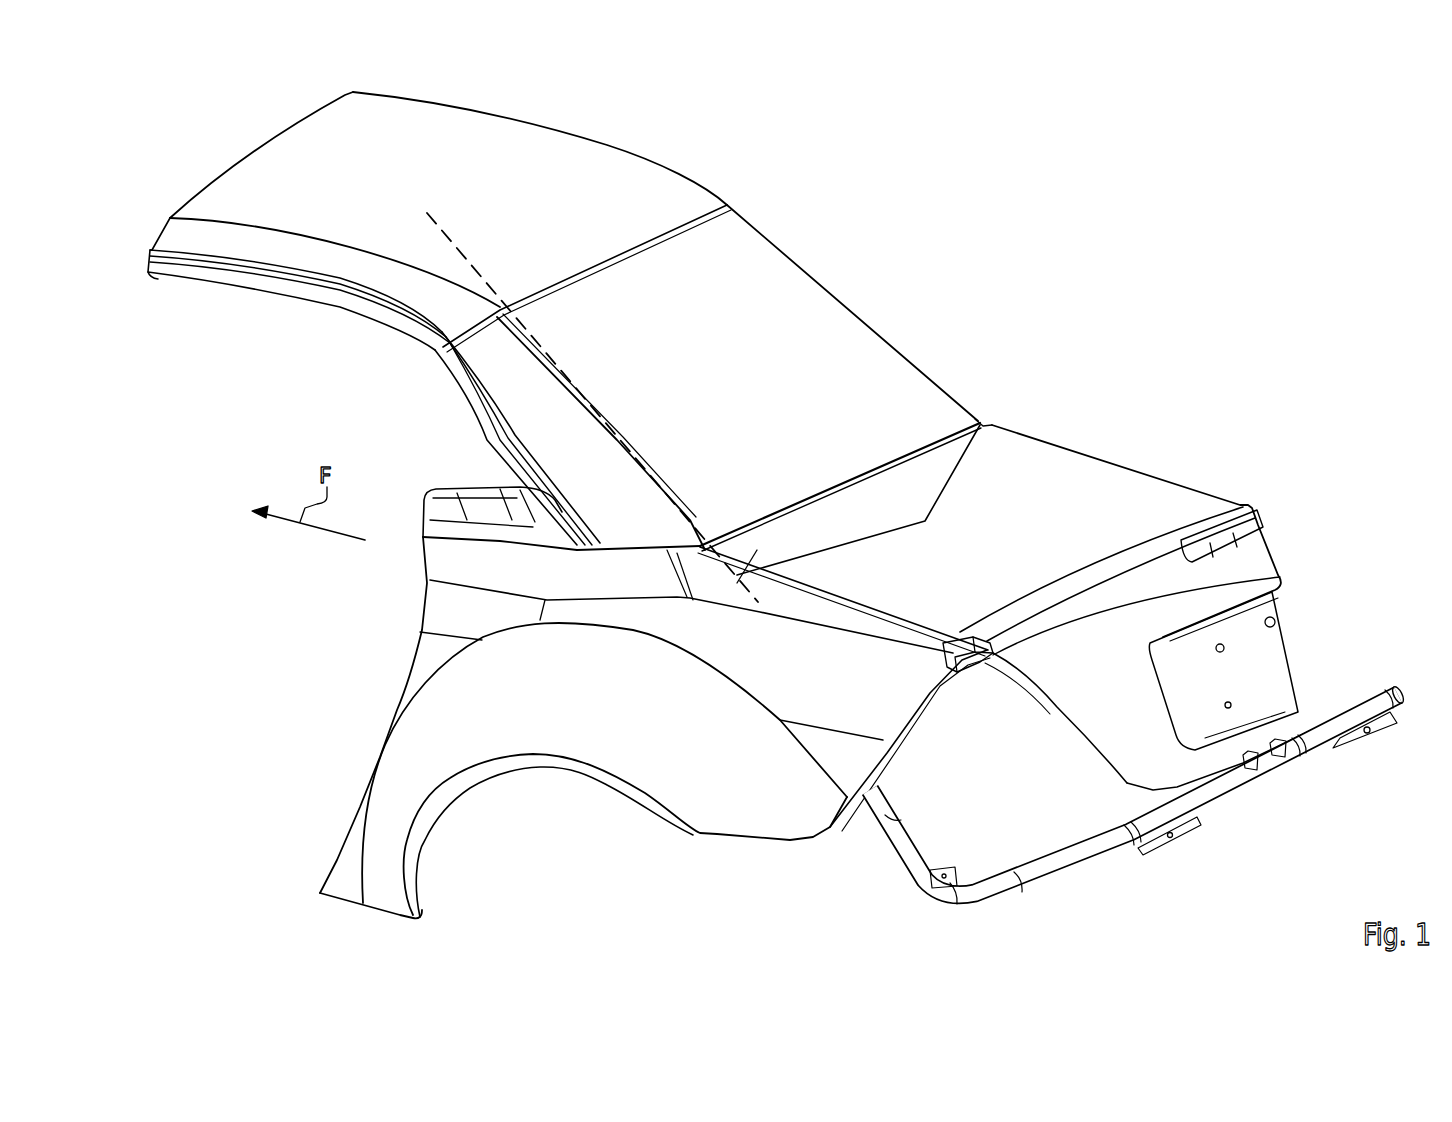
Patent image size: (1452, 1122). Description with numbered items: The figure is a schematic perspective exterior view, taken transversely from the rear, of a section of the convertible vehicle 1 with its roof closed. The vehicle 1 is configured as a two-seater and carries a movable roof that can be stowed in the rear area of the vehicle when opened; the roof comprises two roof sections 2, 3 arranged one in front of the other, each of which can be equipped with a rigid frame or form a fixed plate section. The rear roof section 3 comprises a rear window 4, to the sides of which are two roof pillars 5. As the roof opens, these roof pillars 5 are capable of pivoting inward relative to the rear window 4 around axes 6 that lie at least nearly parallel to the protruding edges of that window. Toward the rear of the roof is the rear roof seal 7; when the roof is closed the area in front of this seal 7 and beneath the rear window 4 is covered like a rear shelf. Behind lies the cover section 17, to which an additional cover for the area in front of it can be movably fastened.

The convertible vehicle 1 is at (1124, 235).
The roof section 2 is at (647, 187).
The rear roof section 3 is at (830, 322).
The rear window 4 is at (757, 385).
The roof pillars 5 is at (491, 370).
The axes 6 is at (455, 253).
The rear roof seal 7 is at (915, 442).
The cover section 17 is at (1053, 473).